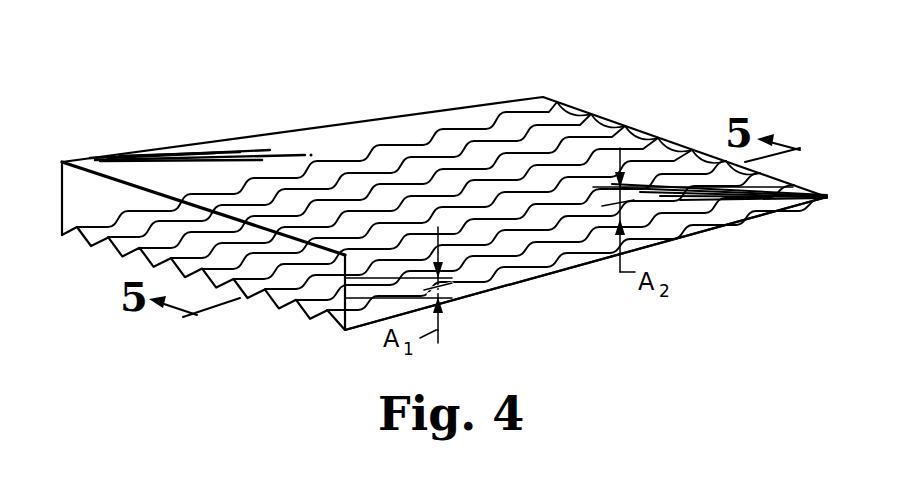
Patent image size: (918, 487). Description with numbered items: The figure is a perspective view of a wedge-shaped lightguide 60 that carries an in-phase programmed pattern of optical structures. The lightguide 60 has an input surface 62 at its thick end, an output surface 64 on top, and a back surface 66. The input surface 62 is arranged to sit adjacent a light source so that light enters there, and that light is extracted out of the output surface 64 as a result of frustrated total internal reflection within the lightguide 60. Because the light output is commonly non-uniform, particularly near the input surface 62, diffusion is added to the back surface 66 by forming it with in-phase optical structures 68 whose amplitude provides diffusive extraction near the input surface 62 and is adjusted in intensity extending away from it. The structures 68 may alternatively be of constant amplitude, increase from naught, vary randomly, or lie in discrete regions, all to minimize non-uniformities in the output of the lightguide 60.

The lightguide 60 is at (444, 188).
The input surface 62 is at (282, 292).
The output surface 64 is at (328, 147).
The back surface 66 is at (489, 288).
The in-phase optical structures 68 is at (533, 267).